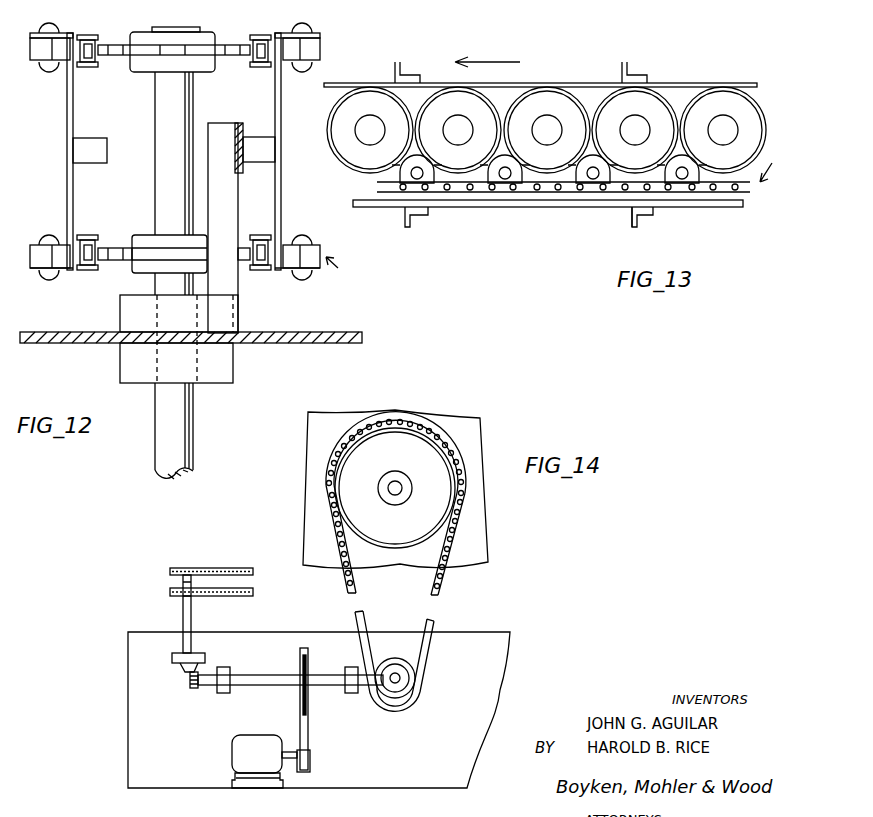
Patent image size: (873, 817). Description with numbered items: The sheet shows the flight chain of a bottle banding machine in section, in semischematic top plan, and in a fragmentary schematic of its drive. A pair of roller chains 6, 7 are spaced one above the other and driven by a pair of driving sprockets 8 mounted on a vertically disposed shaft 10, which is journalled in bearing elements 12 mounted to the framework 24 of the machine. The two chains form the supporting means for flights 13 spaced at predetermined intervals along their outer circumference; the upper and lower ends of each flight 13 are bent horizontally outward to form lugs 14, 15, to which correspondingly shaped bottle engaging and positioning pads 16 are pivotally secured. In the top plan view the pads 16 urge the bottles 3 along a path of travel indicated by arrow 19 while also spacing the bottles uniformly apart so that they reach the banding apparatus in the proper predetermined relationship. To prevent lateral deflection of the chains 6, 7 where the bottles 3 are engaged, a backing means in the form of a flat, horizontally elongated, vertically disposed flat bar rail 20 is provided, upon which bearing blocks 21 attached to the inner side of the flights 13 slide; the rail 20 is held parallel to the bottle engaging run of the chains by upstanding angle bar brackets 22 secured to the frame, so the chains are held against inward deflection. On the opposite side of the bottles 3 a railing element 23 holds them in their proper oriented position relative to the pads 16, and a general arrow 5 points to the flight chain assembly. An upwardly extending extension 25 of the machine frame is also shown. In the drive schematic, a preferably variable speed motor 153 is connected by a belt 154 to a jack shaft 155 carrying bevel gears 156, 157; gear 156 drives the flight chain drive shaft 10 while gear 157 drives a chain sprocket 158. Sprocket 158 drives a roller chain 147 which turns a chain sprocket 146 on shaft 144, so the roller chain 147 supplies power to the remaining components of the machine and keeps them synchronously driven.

In FIG. 13, the bottles 3 is at (663, 97).
In FIG. 12, the conveyor carriage assembly 5 is at (336, 269).
In FIG. 13, the conveyor carriage assembly 5 is at (770, 166).
In FIG. 12, the roller chain 6 is at (100, 36).
In FIG. 13, the roller chain 6 is at (462, 193).
In FIG. 14, the roller chain 6 is at (240, 568).
In FIG. 12, the roller chain 7 is at (265, 235).
In FIG. 14, the roller chain 7 is at (253, 592).
In FIG. 12, the driving sprockets 8 is at (234, 55).
In FIG. 12, the flight chain drive shaft 10 is at (164, 194).
In FIG. 14, the flight chain drive shaft 10 is at (183, 611).
In FIG. 12, the bearing elements 12 is at (121, 316).
In FIG. 12, the flights 13 is at (67, 104).
In FIG. 13, the flights 13 is at (569, 193).
In FIG. 12, the lug 14 is at (70, 33).
In FIG. 13, the lug 14 is at (500, 193).
In FIG. 12, the lug 15 is at (66, 273).
In FIG. 12, the bottle engaging and positioning pads 16 is at (44, 55).
In FIG. 13, the bottle engaging and positioning pads 16 is at (516, 185).
In FIG. 13, the arrow 19 is at (505, 60).
In FIG. 12, the flat bar rail 20 is at (240, 123).
In FIG. 13, the flat bar rail 20 is at (708, 207).
In FIG. 12, the bearing blocks 21 is at (97, 138).
In FIG. 13, the bearing blocks 21 is at (668, 193).
In FIG. 12, the angle bar brackets 22 is at (226, 123).
In FIG. 13, the angle bar brackets 22 is at (634, 222).
In FIG. 13, the railing element 23 is at (722, 67).
In FIG. 12, the framework 24 is at (357, 332).
In FIG. 14, the extension 25 is at (472, 432).
In FIG. 14, the shaft 144 is at (399, 480).
In FIG. 14, the chain sprocket 146 is at (353, 477).
In FIG. 14, the roller chain 147 is at (437, 593).
In FIG. 14, the motor 153 is at (240, 752).
In FIG. 14, the belt 154 is at (308, 727).
In FIG. 14, the jack shaft 155 is at (285, 676).
In FIG. 14, the bevel gear 156 is at (193, 680).
In FIG. 14, the bevel gear 157 is at (374, 688).
In FIG. 14, the chain sprocket 158 is at (415, 682).